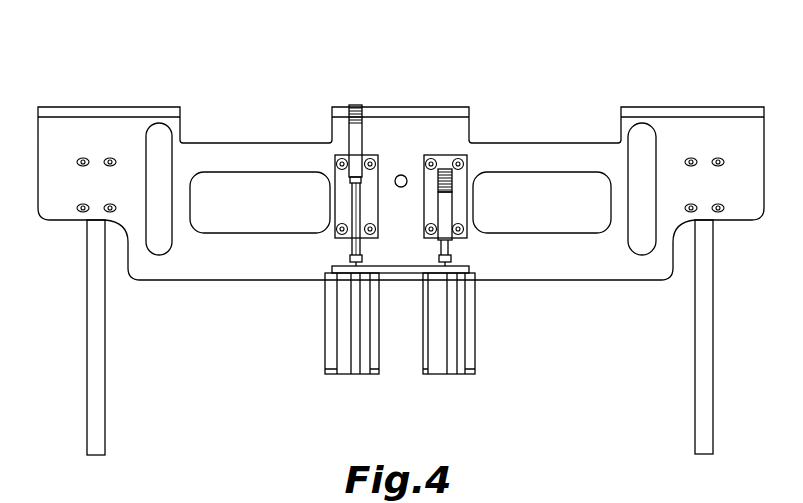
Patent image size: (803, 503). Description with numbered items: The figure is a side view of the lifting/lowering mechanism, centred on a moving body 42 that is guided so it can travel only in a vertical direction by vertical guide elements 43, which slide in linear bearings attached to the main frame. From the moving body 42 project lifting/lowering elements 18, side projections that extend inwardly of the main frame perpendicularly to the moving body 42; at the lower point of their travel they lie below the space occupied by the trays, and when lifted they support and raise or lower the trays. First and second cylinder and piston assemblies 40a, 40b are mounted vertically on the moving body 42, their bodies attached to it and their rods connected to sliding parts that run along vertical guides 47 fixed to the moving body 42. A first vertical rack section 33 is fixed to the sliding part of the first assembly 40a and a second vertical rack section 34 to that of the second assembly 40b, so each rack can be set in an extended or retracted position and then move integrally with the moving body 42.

The lifting/lowering element 18 is at (86, 113).
The moving body 42 is at (565, 157).
The vertical guide 47 is at (340, 177).
The first vertical rack section 33 is at (352, 105).
The second vertical rack section 34 is at (443, 170).
The first cylinder and piston assembly 40a is at (345, 317).
The second cylinder and piston assembly 40b is at (453, 320).
The vertical guide element 43 is at (97, 393).